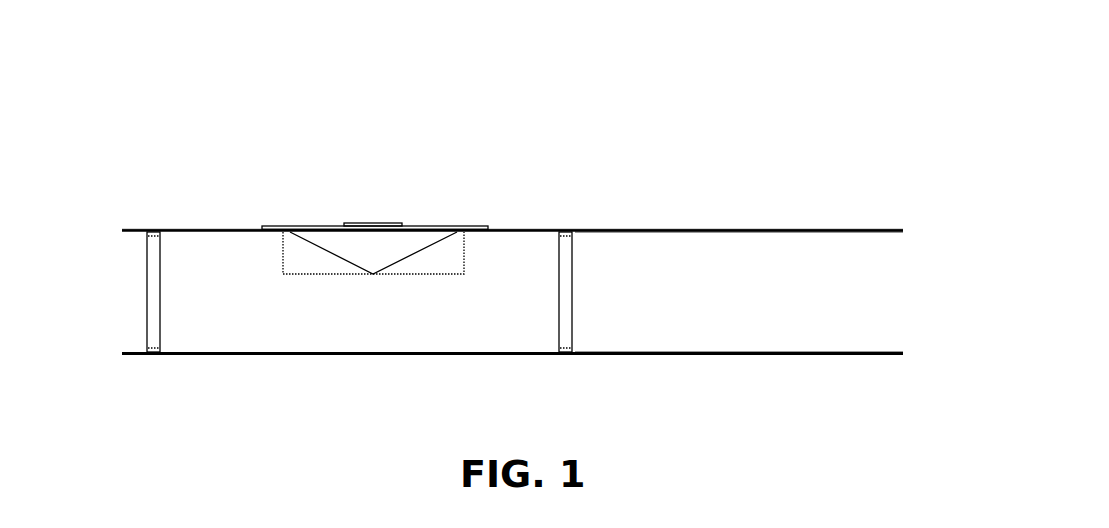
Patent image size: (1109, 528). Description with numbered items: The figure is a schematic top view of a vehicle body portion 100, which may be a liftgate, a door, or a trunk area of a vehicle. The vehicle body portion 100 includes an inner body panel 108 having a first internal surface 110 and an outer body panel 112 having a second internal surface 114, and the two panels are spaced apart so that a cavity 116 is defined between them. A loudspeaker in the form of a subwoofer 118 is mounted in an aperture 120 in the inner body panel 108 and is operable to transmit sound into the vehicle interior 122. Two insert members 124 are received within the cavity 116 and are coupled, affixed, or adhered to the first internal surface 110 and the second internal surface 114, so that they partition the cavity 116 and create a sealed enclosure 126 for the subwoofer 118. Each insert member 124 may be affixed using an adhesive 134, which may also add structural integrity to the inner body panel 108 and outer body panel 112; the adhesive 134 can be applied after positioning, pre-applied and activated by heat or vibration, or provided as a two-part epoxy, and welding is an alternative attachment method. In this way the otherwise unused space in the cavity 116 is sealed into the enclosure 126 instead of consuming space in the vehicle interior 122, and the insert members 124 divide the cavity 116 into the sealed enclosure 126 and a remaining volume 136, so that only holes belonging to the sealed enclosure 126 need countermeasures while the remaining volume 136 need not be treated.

The vehicle body portion 100 is at (214, 150).
The inner body panel 108 is at (720, 227).
The first internal surface 110 is at (852, 233).
The outer body panel 112 is at (719, 360).
The second internal surface 114 is at (853, 352).
The cavity 116 is at (807, 274).
The subwoofer 118 is at (441, 220).
The aperture 120 is at (262, 230).
The vehicle interior 122 is at (614, 190).
The insert member 124 is at (147, 312).
The sealed enclosure 126 is at (362, 320).
The adhesive 134 is at (147, 235).
The remaining volume 136 is at (746, 308).